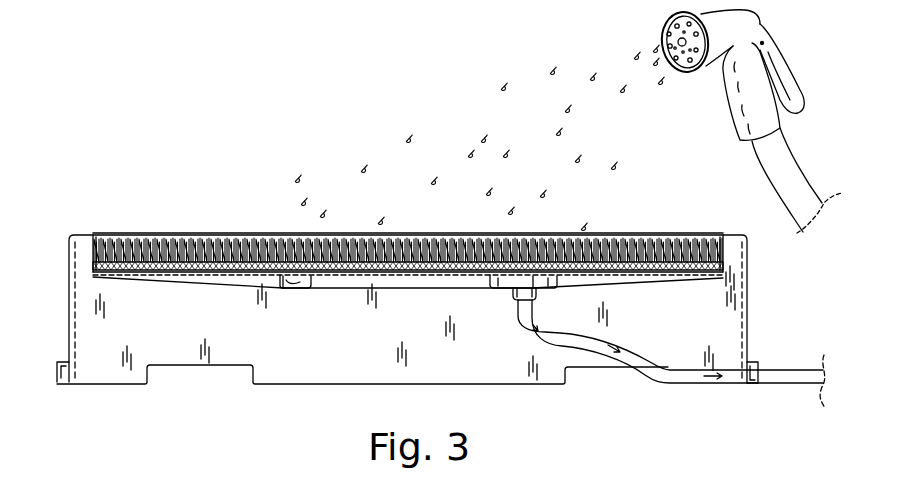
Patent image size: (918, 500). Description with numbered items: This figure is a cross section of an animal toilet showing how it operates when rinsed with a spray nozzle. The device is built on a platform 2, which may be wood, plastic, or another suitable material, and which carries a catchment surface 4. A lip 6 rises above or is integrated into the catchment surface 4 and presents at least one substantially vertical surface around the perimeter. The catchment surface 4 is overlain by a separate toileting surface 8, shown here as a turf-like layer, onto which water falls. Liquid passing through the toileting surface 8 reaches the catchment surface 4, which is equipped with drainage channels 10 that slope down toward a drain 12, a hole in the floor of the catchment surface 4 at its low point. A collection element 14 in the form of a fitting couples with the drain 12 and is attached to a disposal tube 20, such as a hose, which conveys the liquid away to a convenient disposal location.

The platform 2 is at (69, 297).
The catchment surface 4 is at (163, 276).
The lip 6 is at (85, 234).
The toileting surface 8 is at (167, 236).
The drainage channels 10 is at (325, 288).
The drain 12 is at (513, 293).
The collection element 14 is at (515, 300).
The disposal tube 20 is at (645, 362).